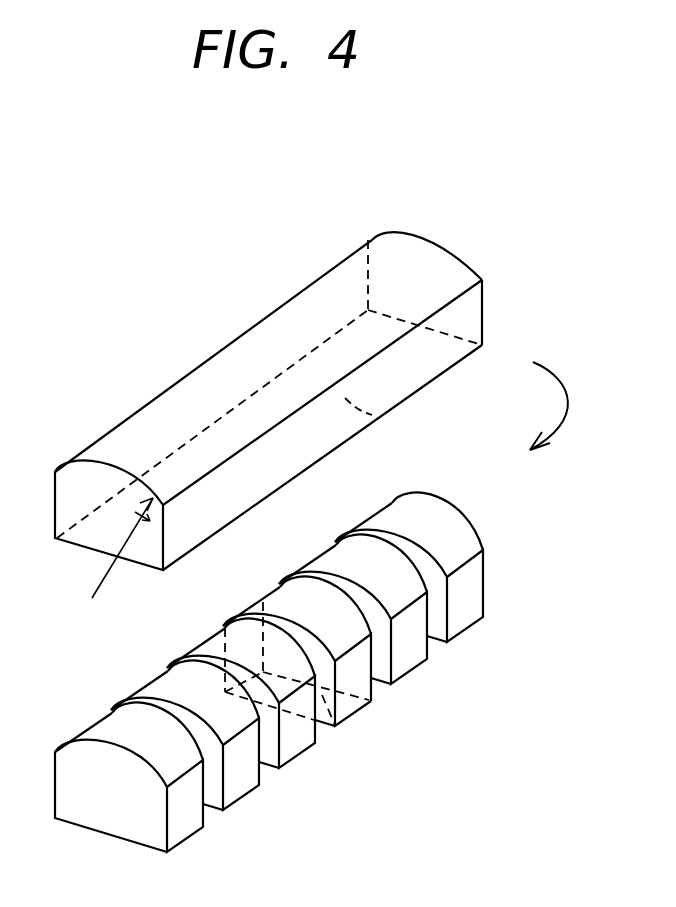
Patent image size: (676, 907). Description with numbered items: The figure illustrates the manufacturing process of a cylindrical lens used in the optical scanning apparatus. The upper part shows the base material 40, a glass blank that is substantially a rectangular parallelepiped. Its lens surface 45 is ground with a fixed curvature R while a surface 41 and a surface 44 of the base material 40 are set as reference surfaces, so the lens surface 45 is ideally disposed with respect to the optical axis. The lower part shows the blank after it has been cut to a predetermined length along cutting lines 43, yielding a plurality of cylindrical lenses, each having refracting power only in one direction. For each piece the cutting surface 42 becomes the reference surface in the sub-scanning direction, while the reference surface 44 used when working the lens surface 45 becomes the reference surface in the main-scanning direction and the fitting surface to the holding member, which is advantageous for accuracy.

The base material 40 is at (310, 283).
The surface 41 is at (380, 418).
The cutting surface 42 is at (420, 667).
The cutting plane 43 is at (275, 610).
The reference surface 44 is at (260, 467).
The lens surface 45 is at (405, 277).
The curvature R is at (114, 548).